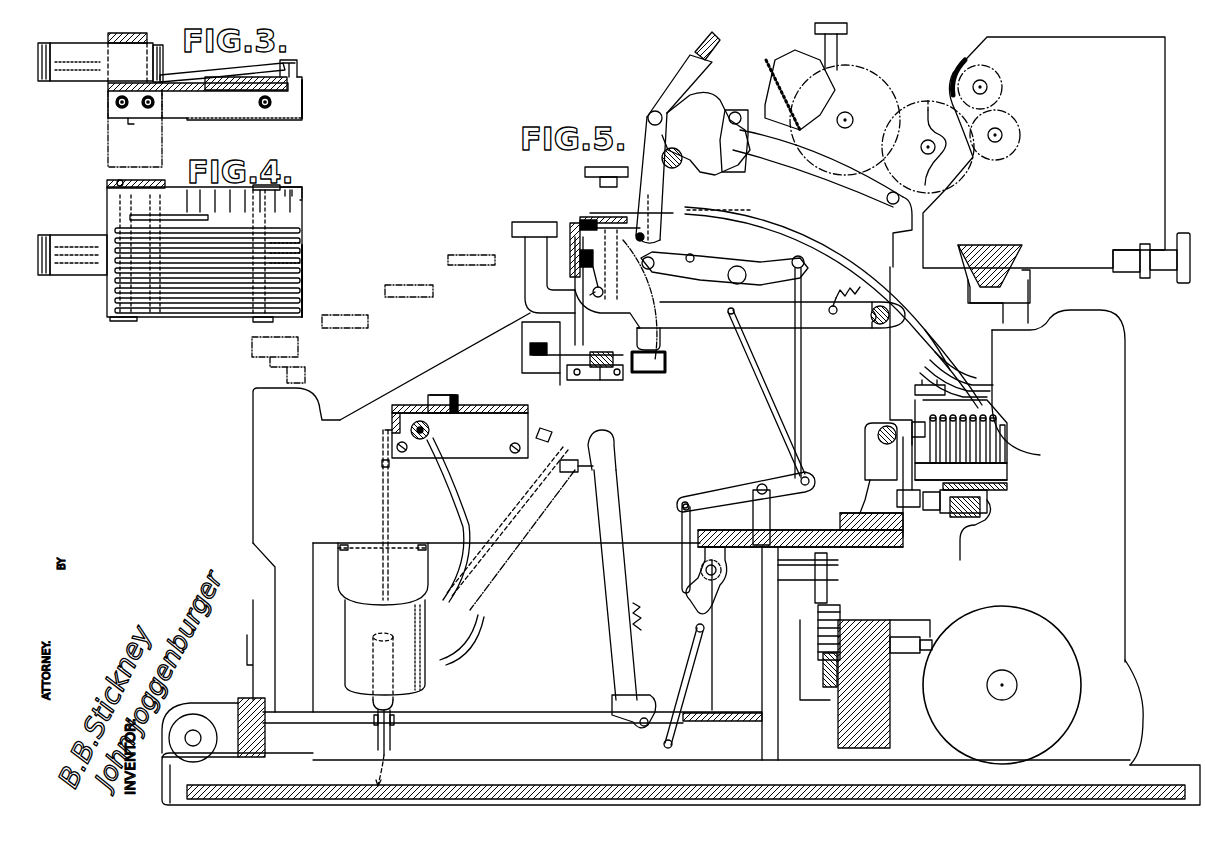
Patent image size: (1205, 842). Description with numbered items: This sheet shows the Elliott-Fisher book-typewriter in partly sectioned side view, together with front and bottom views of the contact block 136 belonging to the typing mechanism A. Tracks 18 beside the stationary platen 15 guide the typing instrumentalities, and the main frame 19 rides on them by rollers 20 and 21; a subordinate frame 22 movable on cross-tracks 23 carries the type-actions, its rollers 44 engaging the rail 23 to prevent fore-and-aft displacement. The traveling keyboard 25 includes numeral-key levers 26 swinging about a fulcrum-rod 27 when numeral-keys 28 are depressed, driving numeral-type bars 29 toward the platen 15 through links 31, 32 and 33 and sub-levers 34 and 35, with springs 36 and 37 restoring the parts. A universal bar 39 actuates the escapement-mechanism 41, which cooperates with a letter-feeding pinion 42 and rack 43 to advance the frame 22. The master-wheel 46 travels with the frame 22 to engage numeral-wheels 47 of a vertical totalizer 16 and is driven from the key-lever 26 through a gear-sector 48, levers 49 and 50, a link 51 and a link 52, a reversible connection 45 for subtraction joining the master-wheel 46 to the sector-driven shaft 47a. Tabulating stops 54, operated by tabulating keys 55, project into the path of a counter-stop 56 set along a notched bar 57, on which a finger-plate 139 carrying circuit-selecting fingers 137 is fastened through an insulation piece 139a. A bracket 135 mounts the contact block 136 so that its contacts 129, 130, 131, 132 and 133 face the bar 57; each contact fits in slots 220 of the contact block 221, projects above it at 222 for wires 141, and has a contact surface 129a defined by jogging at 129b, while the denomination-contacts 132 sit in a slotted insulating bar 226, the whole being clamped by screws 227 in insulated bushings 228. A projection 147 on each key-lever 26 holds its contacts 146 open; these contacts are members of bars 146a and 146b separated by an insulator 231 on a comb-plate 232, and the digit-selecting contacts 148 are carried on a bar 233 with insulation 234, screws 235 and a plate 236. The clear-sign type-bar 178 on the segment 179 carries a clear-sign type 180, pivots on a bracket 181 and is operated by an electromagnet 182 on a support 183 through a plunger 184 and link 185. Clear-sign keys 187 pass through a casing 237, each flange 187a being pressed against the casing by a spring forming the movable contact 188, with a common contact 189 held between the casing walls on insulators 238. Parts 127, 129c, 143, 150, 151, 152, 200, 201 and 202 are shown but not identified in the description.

In FIG. 5, the stationary platen 15 is at (548, 785).
In FIG. 5, the vertical totalizer 16 is at (1166, 125).
In FIG. 5, the tracks 18 is at (1070, 785).
In FIG. 5, the frame 19 is at (1126, 418).
In FIG. 5, the roller 20 is at (1002, 685).
In FIG. 5, the roller 21 is at (195, 718).
In FIG. 5, the subordinate frame 22 is at (475, 344).
In FIG. 5, the cross-track 23 is at (895, 625).
In FIG. 5, the traveling keyboard 25 is at (431, 272).
In FIG. 5, the numeral-key lever 26 is at (765, 328).
In FIG. 5, the fulcrum-rod 27 is at (875, 324).
In FIG. 5, the numeral-key 28 is at (512, 222).
In FIG. 5, the numeral-type bar 29 is at (606, 595).
In FIG. 5, the link 31 is at (767, 402).
In FIG. 5, the link 32 is at (683, 528).
In FIG. 5, the link 33 is at (695, 660).
In FIG. 5, the sub-lever 34 is at (712, 497).
In FIG. 5, the sub-lever 35 is at (706, 590).
In FIG. 5, the spring 36 is at (851, 296).
In FIG. 5, the spring 37 is at (642, 614).
In FIG. 5, the universal bar 39 is at (666, 362).
In FIG. 5, the escapement-mechanism 41 is at (800, 705).
In FIG. 5, the letter-feeding pinion 42 is at (819, 610).
In FIG. 5, the rack 43 is at (856, 684).
In FIG. 5, the roller 44 is at (895, 655).
In FIG. 5, the reversible connection 45 is at (878, 80).
In FIG. 5, the master-wheel 46 is at (935, 108).
In FIG. 5, the numeral-wheel 47 is at (1022, 135).
In FIG. 5, the sector-driven shaft 47a is at (850, 116).
In FIG. 5, the gear-sector 48 is at (770, 70).
In FIG. 5, the lever 49 is at (706, 133).
In FIG. 5, the lever 50 is at (840, 183).
In FIG. 5, the link 51 is at (745, 165).
In FIG. 5, the link 52 is at (648, 150).
In FIG. 5, the denominational tabulating stop 54 is at (902, 497).
In FIG. 5, the tabulating key 55 is at (590, 167).
In FIG. 5, the counter-stop 56 is at (932, 512).
In FIG. 5, the notched bar 57 is at (965, 520).
In FIG. 3, the knob 127 is at (100, 57).
In FIG. 4, the knob 127 is at (72, 255).
In FIG. 3, the contact 129 is at (300, 120).
In FIG. 4, the contact 129 is at (240, 278).
In FIG. 5, the contact 129 is at (985, 405).
In FIG. 3, the contact surface 129a is at (200, 120).
In FIG. 3, the jog 129b is at (175, 105).
In FIG. 4, the type bar end 129c is at (302, 248).
In FIG. 5, the type bar end 129c is at (968, 390).
In FIG. 4, the contact 130 is at (190, 295).
In FIG. 4, the cycle contact 131 is at (165, 215).
In FIG. 5, the cycle contact 131 is at (877, 496).
In FIG. 4, the denomination-contact 132 is at (303, 202).
In FIG. 4, the power-line contact 133 is at (205, 310).
In FIG. 5, the power-line contact 133 is at (1012, 450).
In FIG. 5, the bracket 135 is at (903, 530).
In FIG. 3, the contact block 136 is at (314, 109).
In FIG. 4, the contact block 136 is at (98, 326).
In FIG. 5, the contact block 136 is at (1016, 460).
In FIG. 5, the circuit-selecting finger 137 is at (1008, 472).
In FIG. 5, the finger-plate 139 is at (995, 490).
In FIG. 5, the insulation piece 139a is at (1008, 482).
In FIG. 3, the wire 141 is at (210, 74).
In FIG. 5, the link 143 is at (945, 355).
In FIG. 5, the contacts 146 is at (575, 268).
In FIG. 5, the crosswise extending bar 146a is at (588, 216).
In FIG. 5, the crosswise extending bar 146b is at (668, 209).
In FIG. 5, the projection 147 is at (601, 297).
In FIG. 5, the digit-selecting contacts 148 is at (522, 360).
In FIG. 5, the rod 150 is at (762, 240).
In FIG. 5, the lever 151 is at (628, 262).
In FIG. 5, the bracket 152 is at (912, 458).
In FIG. 5, the clear-sign type-bar 178 is at (384, 510).
In FIG. 5, the segment 179 is at (728, 721).
In FIG. 5, the clear-sign type 180 is at (382, 463).
In FIG. 5, the bracket 181 is at (376, 728).
In FIG. 5, the electromagnet 182 is at (427, 632).
In FIG. 5, the support 183 is at (383, 574).
In FIG. 5, the plunger 184 is at (375, 670).
In FIG. 5, the link 185 is at (390, 742).
In FIG. 5, the clear-sign key 187 is at (428, 400).
In FIG. 5, the flange 187a is at (455, 395).
In FIG. 5, the movable contact 188 is at (460, 436).
In FIG. 5, the common contact 189 is at (385, 430).
In FIG. 5, the tab 200 is at (545, 428).
In FIG. 5, the tube 201 is at (460, 500).
In FIG. 5, the tube 202 is at (476, 565).
In FIG. 3, the slot 220 is at (132, 119).
In FIG. 3, the contact block 221 is at (304, 90).
In FIG. 4, the contact block 221 is at (300, 288).
In FIG. 5, the contact block 221 is at (1008, 438).
In FIG. 3, the projection 222 is at (288, 60).
In FIG. 5, the projection 222 is at (918, 422).
In FIG. 4, the slotted bar 226 is at (303, 189).
In FIG. 3, the screw 227 is at (116, 104).
In FIG. 4, the screw 227 is at (268, 185).
In FIG. 3, the insulated bushing 228 is at (281, 106).
In FIG. 4, the insulated bushing 228 is at (255, 300).
In FIG. 5, the insulator 231 is at (570, 222).
In FIG. 5, the comb-plate 232 is at (575, 330).
In FIG. 5, the bar 233 is at (558, 375).
In FIG. 5, the insulation 234 is at (585, 380).
In FIG. 5, the screw 235 is at (597, 350).
In FIG. 5, the plate 236 is at (605, 380).
In FIG. 5, the casing 237 is at (392, 407).
In FIG. 5, the insulator 238 is at (430, 433).
In FIG. 5, the typing mechanism A is at (248, 462).